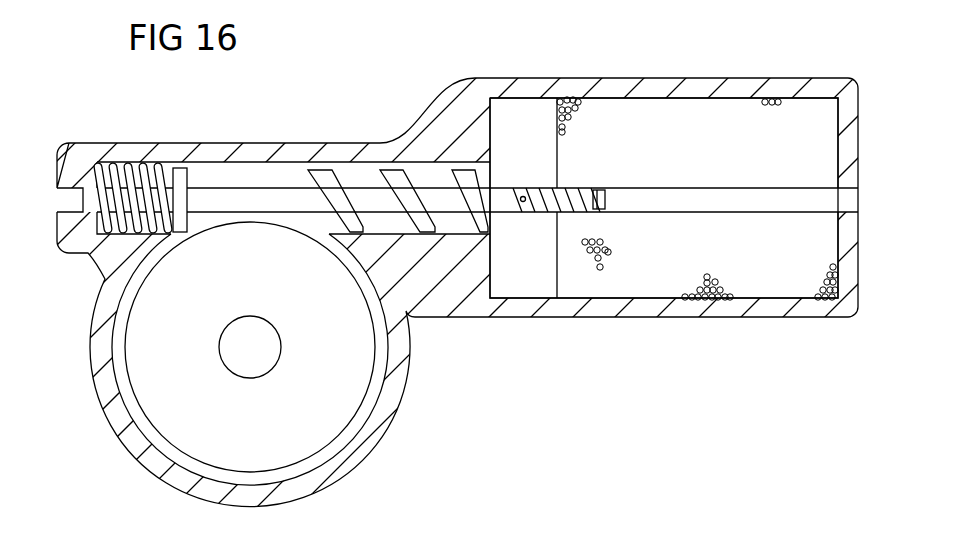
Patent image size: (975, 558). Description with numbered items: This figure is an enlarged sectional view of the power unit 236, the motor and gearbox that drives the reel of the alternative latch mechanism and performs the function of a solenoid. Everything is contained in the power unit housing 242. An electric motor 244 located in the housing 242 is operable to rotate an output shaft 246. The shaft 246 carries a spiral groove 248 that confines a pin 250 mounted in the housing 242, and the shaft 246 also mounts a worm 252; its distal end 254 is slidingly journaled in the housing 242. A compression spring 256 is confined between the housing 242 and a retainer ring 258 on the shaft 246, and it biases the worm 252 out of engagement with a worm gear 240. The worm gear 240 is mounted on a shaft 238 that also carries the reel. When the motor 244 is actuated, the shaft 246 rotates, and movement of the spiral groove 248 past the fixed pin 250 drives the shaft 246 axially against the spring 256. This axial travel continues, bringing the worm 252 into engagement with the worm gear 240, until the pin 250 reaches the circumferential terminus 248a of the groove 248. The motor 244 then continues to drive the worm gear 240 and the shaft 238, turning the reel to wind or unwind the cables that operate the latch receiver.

The power unit 236 is at (524, 362).
The shaft 238 is at (268, 345).
The worm gear 240 is at (288, 455).
The power unit housing 242 is at (594, 310).
The electric motor 244 is at (662, 120).
The output shaft 246 is at (747, 193).
The spiral groove 248 is at (557, 188).
The circumferential terminus 248a is at (600, 212).
The pin 250 is at (523, 197).
The worm 252 is at (323, 175).
The distal end 254 is at (89, 207).
The compression spring 256 is at (123, 232).
The retainer ring 258 is at (177, 172).